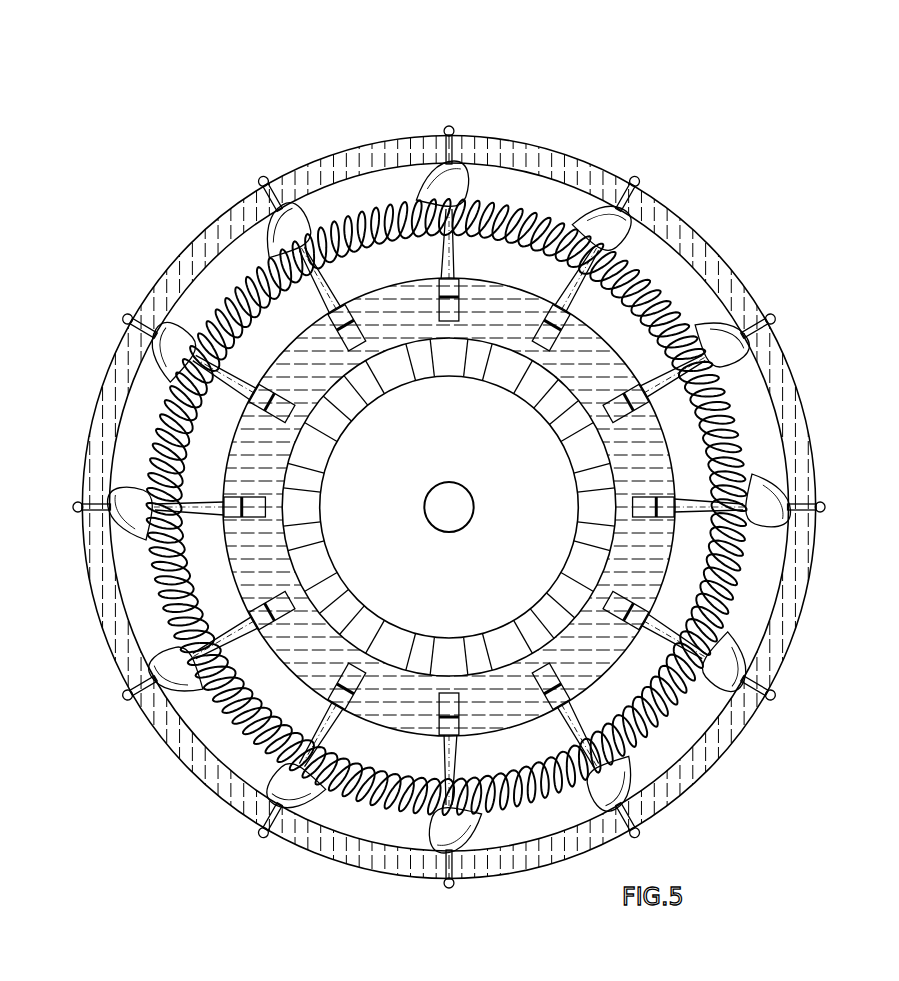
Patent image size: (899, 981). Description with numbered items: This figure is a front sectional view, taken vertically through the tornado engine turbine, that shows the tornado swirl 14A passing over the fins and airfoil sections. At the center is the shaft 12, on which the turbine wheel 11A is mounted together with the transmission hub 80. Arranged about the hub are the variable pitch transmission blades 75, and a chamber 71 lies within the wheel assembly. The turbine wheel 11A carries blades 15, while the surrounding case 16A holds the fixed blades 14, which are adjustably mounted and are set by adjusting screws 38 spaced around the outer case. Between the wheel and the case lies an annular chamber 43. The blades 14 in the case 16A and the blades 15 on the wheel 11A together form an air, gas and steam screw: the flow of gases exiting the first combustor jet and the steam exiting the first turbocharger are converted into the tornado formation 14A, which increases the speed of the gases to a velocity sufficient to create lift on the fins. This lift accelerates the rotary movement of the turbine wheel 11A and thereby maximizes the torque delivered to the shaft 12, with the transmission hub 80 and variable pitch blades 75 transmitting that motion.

The shaft 12 is at (640, 475).
The transmission hub 80 is at (569, 590).
The chamber 71 is at (348, 570).
The variable pitch transmission blades 75 is at (528, 600).
The turbine wheel 11A is at (535, 507).
The tornado swirl 14A is at (446, 507).
The blades 15 is at (449, 425).
The fixed blades 14 is at (448, 478).
The annular chamber 43 is at (487, 507).
The case 16A is at (448, 507).
The adjusting screw 38 is at (449, 492).